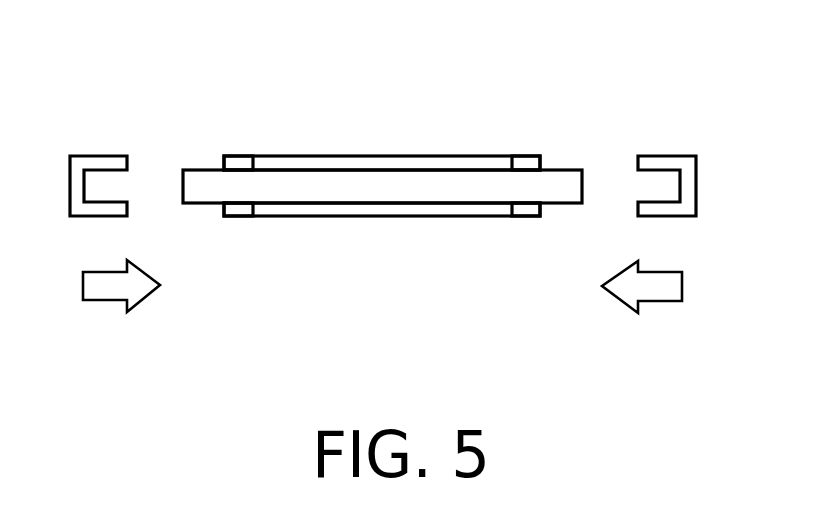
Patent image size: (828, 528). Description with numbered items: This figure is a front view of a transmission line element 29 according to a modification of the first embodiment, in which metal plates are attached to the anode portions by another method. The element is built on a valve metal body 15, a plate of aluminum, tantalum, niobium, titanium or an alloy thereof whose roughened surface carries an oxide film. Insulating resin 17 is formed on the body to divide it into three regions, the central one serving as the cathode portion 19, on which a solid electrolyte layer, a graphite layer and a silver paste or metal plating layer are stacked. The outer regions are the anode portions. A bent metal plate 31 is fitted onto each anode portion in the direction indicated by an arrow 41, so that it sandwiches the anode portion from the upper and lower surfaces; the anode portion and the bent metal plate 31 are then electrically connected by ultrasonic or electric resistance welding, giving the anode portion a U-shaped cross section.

The valve metal body 15 is at (198, 187).
The insulating resin 17 is at (243, 165).
The cathode portion 19 is at (440, 162).
The transmission line element 29 is at (372, 126).
The bent metal plate 31 is at (105, 165).
The arrow 41 is at (105, 285).